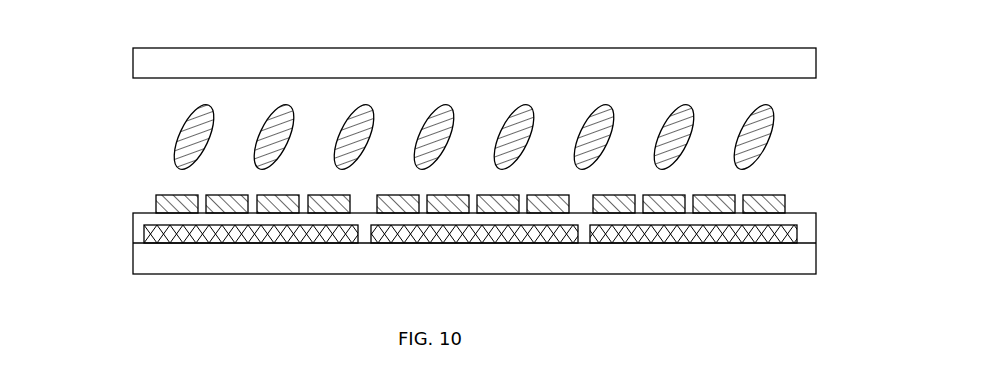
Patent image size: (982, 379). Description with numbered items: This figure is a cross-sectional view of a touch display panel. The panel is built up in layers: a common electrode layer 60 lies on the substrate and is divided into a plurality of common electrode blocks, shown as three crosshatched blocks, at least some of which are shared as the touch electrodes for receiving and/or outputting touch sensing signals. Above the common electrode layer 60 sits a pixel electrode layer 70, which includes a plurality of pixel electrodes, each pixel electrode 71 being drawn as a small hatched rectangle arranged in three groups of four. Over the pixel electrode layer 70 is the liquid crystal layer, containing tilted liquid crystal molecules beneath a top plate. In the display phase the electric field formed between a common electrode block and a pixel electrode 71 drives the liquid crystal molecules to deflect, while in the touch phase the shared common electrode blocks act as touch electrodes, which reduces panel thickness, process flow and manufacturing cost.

The pixel electrode layer 70 is at (177, 203).
The pixel electrode 71 is at (767, 203).
The common electrode layer 60 is at (285, 238).